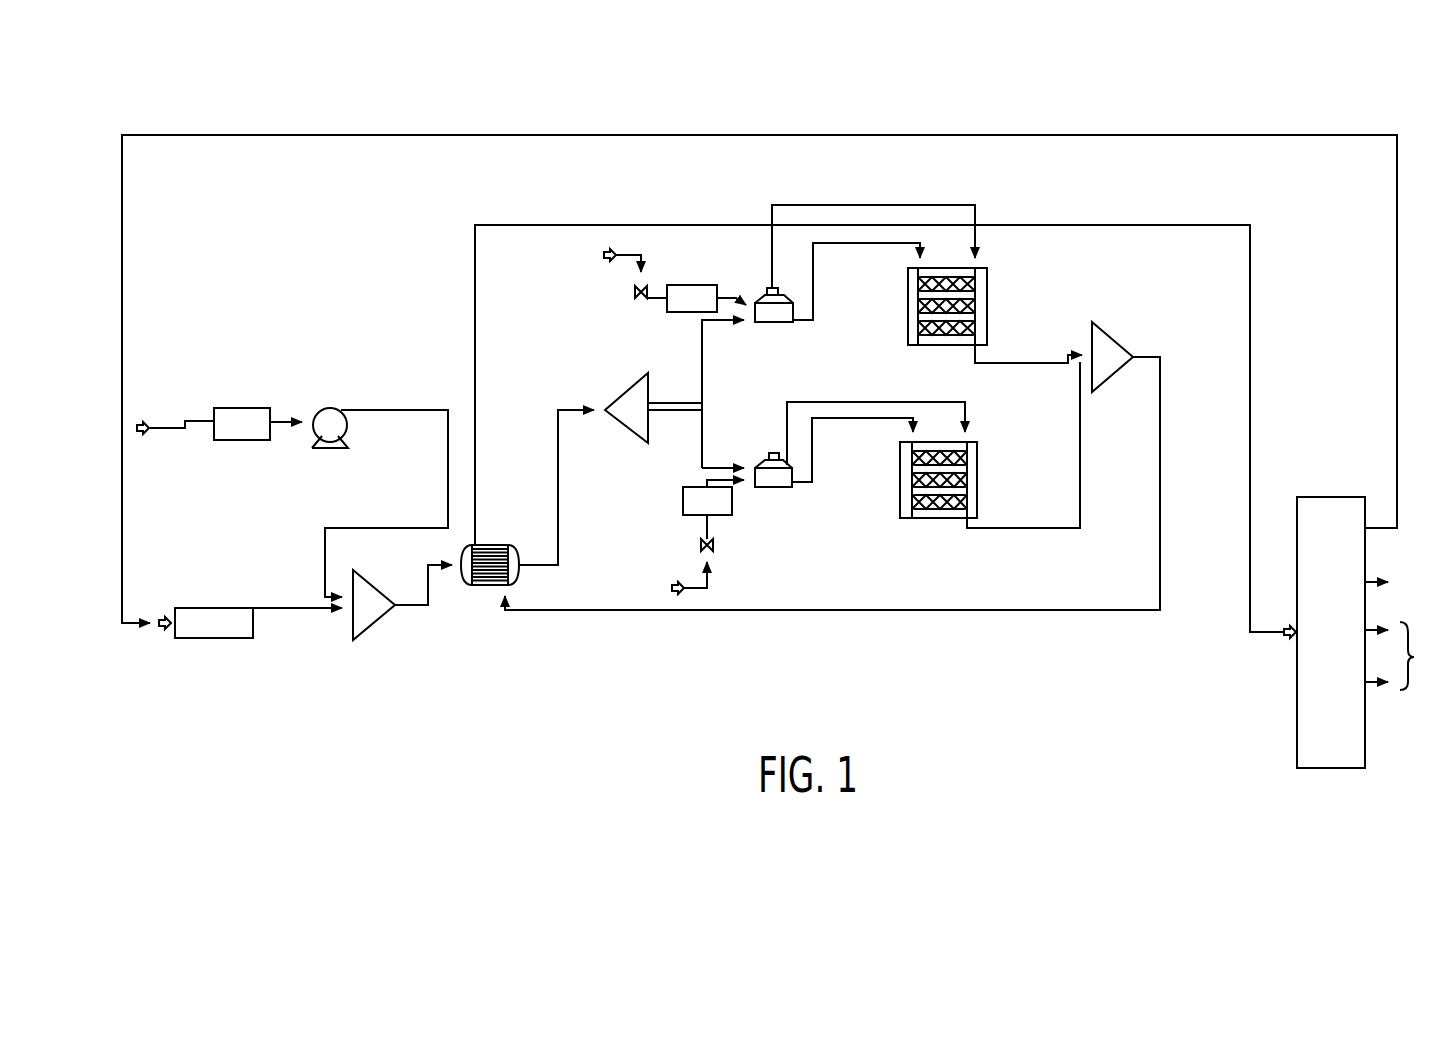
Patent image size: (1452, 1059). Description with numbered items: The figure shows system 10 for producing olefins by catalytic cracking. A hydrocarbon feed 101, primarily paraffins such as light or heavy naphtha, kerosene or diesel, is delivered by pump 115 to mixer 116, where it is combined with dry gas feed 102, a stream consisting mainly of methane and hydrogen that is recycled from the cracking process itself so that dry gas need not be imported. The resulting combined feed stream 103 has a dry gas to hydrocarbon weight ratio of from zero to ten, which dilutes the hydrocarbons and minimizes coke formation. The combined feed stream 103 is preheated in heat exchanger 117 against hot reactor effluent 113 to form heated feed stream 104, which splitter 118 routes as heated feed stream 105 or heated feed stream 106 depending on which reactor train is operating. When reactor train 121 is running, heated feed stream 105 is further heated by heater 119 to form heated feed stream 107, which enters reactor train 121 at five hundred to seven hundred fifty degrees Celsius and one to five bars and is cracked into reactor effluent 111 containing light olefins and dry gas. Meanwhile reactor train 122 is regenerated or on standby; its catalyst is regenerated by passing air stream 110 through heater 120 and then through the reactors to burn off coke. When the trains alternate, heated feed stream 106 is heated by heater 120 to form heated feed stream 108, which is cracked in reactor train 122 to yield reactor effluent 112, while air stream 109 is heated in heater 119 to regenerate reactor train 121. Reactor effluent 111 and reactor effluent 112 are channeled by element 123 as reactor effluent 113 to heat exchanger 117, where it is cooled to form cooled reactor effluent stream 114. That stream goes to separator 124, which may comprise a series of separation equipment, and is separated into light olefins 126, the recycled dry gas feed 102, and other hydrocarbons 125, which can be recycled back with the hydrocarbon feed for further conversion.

The system 10 is at (668, 92).
The hydrocarbon feed 101 is at (245, 408).
The dry gas feed 102 is at (215, 641).
The combined feed stream 103 is at (417, 607).
The heated feed stream 104 is at (560, 505).
The heated feed stream 105 is at (703, 392).
The heated feed stream 106 is at (700, 462).
The heated feed stream 107 is at (825, 245).
The heated feed stream 108 is at (863, 402).
The air stream 109 is at (630, 250).
The air stream 110 is at (823, 420).
The reactor effluent 111 is at (1020, 364).
The reactor effluent 112 is at (1022, 530).
The reactor effluent 113 is at (1163, 483).
The cooled reactor effluent stream 114 is at (1083, 225).
The pump 115 is at (325, 408).
The mixer 116 is at (362, 635).
The heat exchanger 117 is at (519, 573).
The splitter 118 is at (628, 392).
The heater 119 is at (798, 323).
The heater 120 is at (775, 490).
The reactor train 121 is at (1030, 264).
The reactor train 122 is at (1020, 433).
The element 123 is at (1110, 378).
The separator 124 is at (1330, 460).
The other hydrocarbons 125 is at (1416, 657).
The light olefins 126 is at (1375, 578).